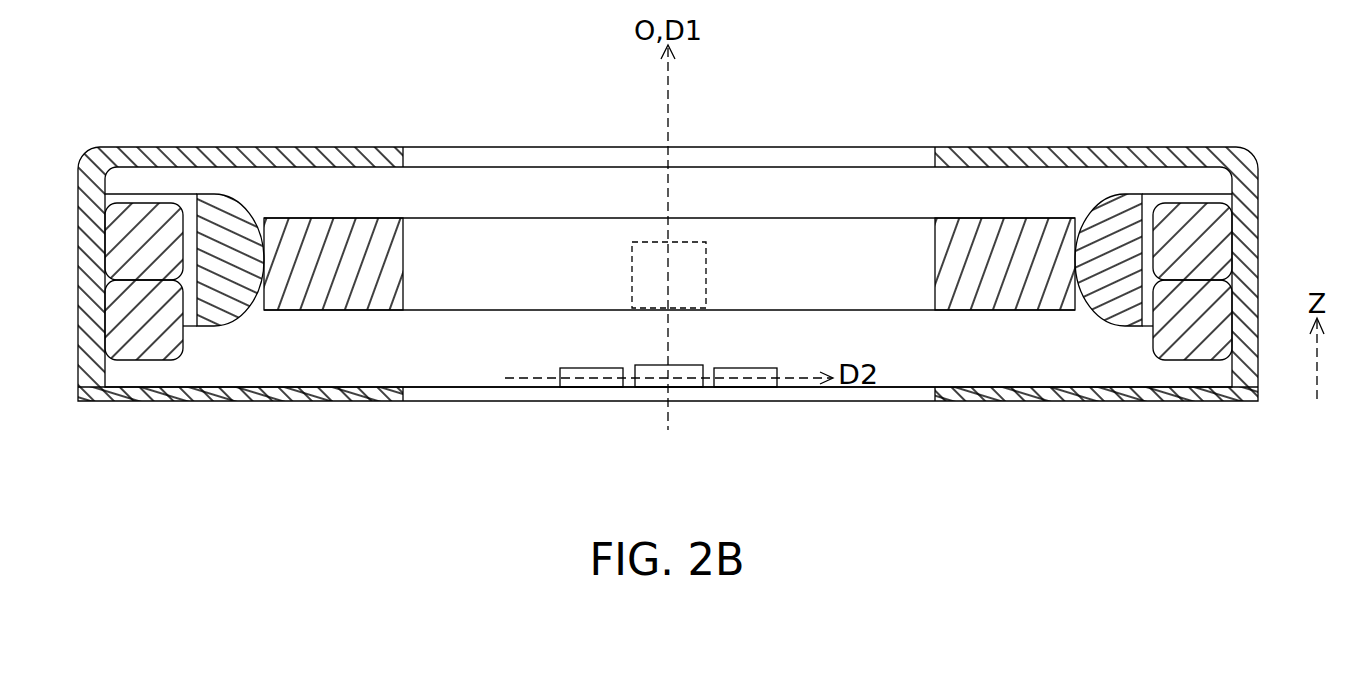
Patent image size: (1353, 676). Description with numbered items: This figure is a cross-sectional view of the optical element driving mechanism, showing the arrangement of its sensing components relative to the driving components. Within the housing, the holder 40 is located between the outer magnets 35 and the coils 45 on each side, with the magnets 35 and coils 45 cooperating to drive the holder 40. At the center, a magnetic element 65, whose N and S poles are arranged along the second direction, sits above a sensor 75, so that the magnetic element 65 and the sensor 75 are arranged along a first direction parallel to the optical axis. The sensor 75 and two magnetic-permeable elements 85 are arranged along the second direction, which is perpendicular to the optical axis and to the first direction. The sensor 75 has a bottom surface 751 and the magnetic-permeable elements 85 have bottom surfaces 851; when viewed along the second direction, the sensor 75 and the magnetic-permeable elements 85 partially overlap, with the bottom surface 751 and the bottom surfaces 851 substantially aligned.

The magnet 35 is at (1188, 232).
The holder 40 is at (988, 258).
The coil 45 is at (1110, 240).
The magnetic element 65 is at (647, 250).
The sensor 75 is at (687, 388).
The bottom surface 751 is at (647, 388).
The magnetic-permeable element 85 is at (597, 388).
The bottom surface 851 is at (570, 388).